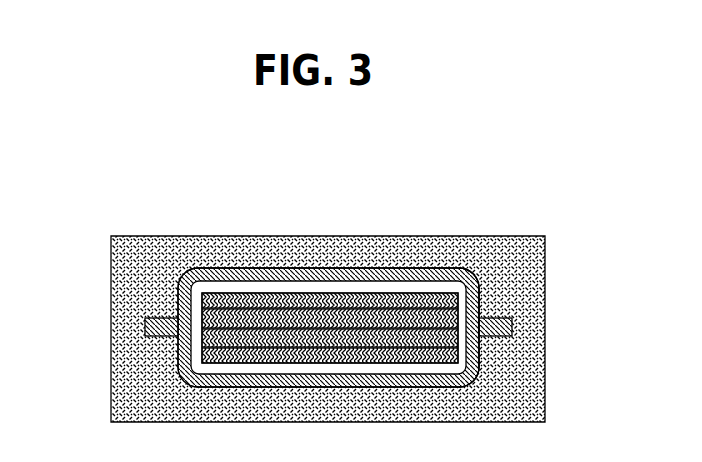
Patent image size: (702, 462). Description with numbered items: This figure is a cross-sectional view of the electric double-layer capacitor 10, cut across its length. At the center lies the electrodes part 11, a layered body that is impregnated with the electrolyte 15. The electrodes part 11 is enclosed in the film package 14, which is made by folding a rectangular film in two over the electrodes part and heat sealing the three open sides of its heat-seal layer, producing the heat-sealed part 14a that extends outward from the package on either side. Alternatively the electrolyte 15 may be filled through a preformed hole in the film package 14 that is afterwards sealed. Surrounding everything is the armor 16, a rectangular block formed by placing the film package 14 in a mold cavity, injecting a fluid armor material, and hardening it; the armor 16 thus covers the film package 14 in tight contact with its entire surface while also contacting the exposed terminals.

The electric double-layer capacitor 10 is at (321, 298).
The electrodes part 11 is at (266, 300).
The film package 14 is at (355, 262).
The heat-sealed part 14a is at (155, 318).
The electrolyte 15 is at (464, 278).
The armor 16 is at (197, 268).